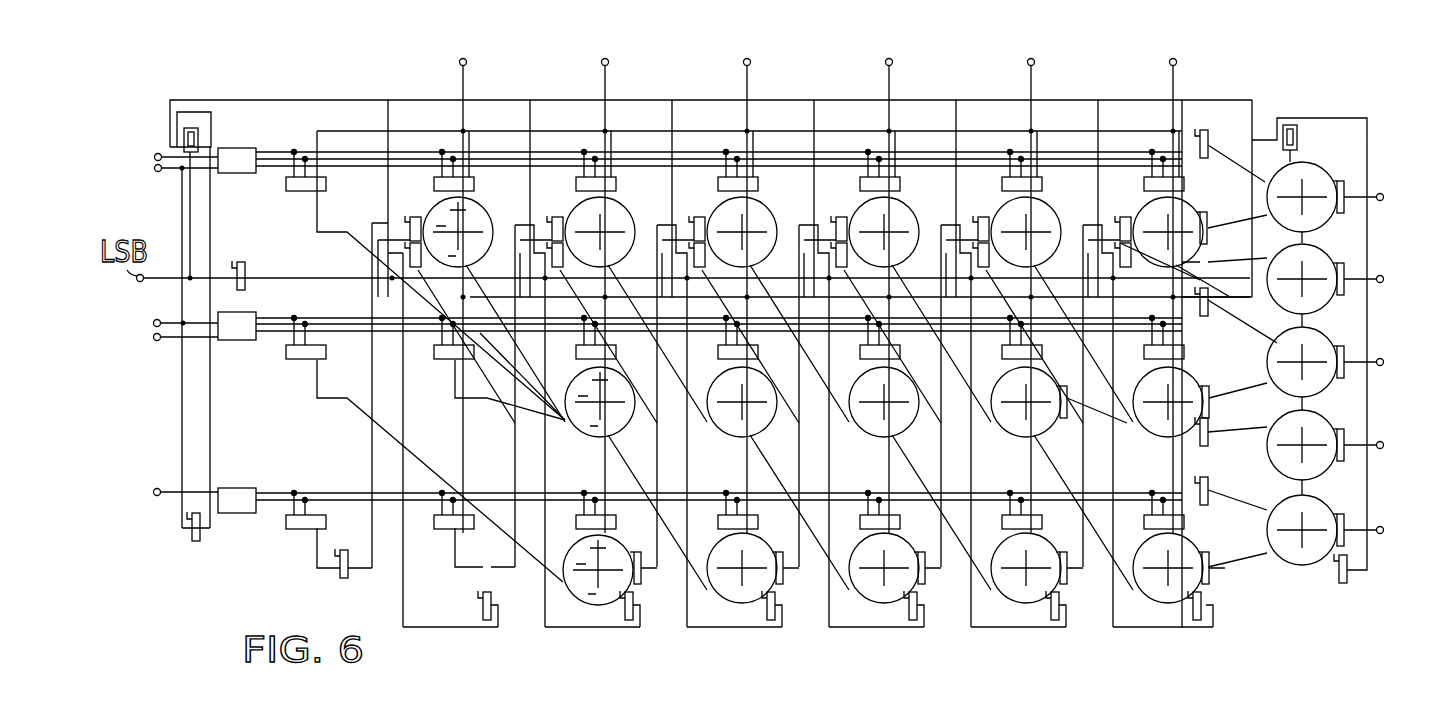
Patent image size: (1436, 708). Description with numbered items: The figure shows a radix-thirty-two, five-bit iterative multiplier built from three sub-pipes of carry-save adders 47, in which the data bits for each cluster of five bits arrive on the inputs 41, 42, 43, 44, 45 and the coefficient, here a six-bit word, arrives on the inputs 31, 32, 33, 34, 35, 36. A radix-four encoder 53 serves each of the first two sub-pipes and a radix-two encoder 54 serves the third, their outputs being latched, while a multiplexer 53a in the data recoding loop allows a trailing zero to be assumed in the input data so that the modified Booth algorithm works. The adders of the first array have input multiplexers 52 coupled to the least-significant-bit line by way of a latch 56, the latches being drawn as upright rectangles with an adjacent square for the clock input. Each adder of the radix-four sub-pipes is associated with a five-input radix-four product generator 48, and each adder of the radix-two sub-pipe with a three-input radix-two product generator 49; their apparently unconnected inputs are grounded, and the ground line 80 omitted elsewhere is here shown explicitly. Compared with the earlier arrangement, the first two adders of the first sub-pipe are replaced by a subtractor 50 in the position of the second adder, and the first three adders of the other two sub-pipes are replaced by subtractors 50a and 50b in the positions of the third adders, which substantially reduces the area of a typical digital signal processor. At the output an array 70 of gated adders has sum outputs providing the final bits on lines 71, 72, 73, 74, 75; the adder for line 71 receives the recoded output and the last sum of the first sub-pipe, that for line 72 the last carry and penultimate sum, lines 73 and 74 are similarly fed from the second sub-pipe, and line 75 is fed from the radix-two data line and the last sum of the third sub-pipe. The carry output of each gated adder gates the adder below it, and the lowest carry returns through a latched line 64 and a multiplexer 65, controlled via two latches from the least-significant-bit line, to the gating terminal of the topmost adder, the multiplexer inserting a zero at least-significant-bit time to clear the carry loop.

The coefficient input 31 is at (466, 60).
The coefficient input 32 is at (608, 60).
The coefficient input 33 is at (750, 60).
The coefficient input 34 is at (892, 60).
The coefficient input 35 is at (1034, 60).
The coefficient input 36 is at (1176, 60).
The data input 41 is at (156, 153).
The data input 42 is at (155, 172).
The data input 43 is at (154, 320).
The data input 44 is at (154, 339).
The data input 45 is at (154, 489).
The carry-save adder 47 is at (618, 213).
The radix-4 product generator 48 is at (326, 186).
The radix-2 product generator 49 is at (298, 531).
The subtractor 50 is at (490, 236).
The subtractor 50a is at (565, 410).
The subtractor 50b is at (562, 578).
The input multiplexer 52 is at (425, 217).
The radix-4 encoder 53 is at (248, 148).
The multiplexer 53a is at (192, 112).
The radix-2 encoder 54 is at (232, 488).
The latch 56 is at (246, 262).
The latched line 64 is at (1338, 118).
The multiplexer 65 is at (1298, 110).
The array of gated adders 70 is at (1305, 596).
The output line 71 is at (1381, 201).
The output line 72 is at (1382, 283).
The output line 73 is at (1386, 344).
The output line 74 is at (1386, 426).
The output line 75 is at (1386, 511).
The ground line 80 is at (938, 95).